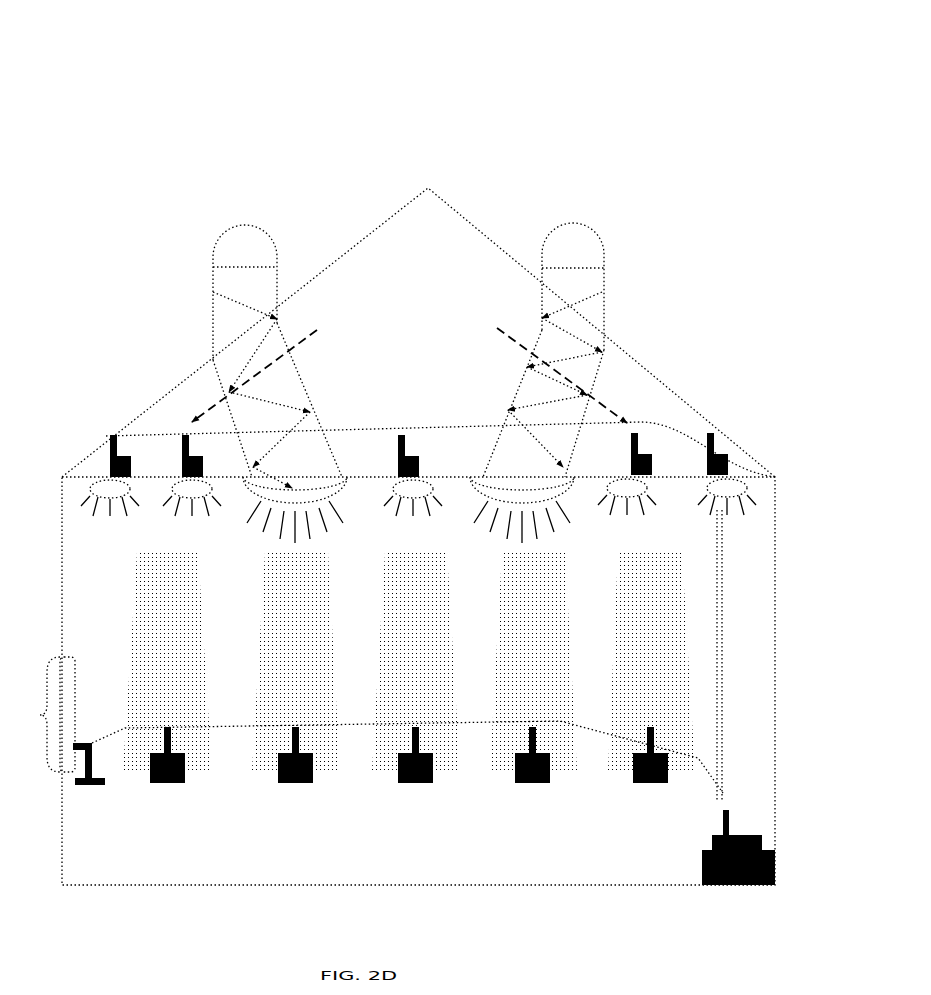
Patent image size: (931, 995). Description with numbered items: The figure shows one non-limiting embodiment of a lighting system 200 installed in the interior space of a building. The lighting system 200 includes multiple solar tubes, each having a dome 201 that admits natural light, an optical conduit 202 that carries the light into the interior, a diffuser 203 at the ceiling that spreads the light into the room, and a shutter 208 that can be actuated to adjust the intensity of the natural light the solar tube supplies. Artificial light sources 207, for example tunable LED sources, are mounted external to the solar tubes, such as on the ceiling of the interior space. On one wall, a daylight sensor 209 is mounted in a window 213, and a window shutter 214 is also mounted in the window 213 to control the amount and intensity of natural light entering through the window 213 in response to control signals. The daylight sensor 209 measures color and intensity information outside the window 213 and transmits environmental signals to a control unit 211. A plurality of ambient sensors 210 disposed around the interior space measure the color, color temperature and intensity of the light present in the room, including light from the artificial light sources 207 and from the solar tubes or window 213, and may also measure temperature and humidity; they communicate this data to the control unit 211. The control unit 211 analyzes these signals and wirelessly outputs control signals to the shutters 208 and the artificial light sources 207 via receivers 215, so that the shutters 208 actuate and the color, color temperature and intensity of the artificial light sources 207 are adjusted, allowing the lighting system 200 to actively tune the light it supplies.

The lighting system 200 is at (377, 80).
The dome 201 is at (239, 225).
The optical conduit 202 is at (283, 333).
The diffuser 203 is at (345, 496).
The artificial light sources 207 is at (178, 482).
The shutter 208 is at (309, 333).
The daylight sensor 209 is at (88, 788).
The ambient sensors 210 is at (292, 785).
The control unit 211 is at (762, 840).
The window 213 is at (38, 714).
The window shutter 214 is at (62, 658).
The receivers 215 is at (716, 452).